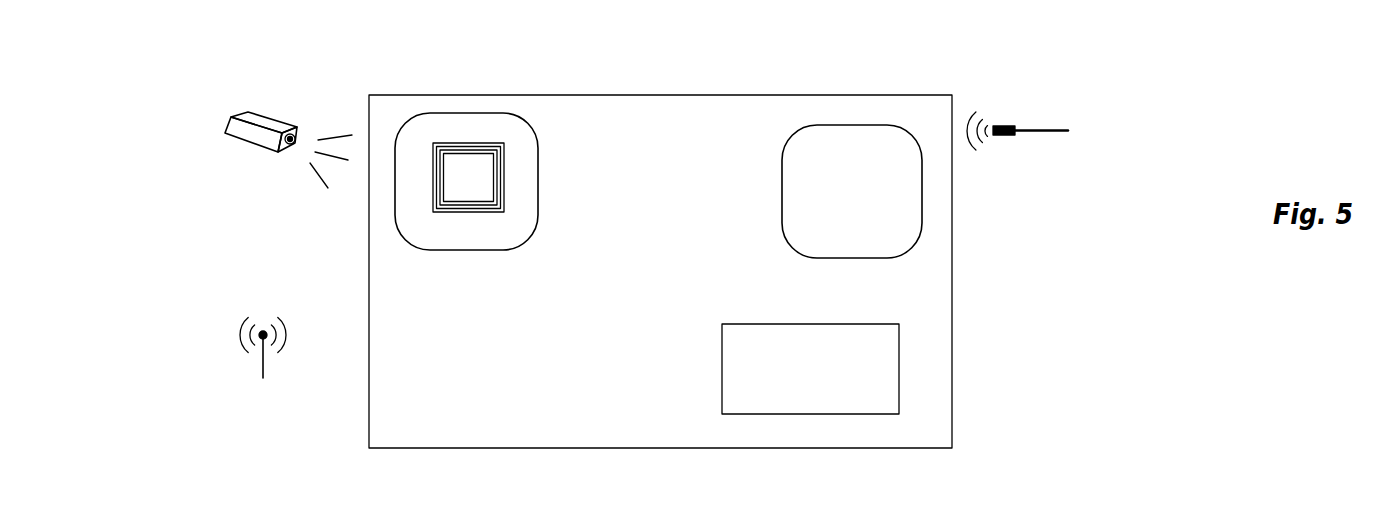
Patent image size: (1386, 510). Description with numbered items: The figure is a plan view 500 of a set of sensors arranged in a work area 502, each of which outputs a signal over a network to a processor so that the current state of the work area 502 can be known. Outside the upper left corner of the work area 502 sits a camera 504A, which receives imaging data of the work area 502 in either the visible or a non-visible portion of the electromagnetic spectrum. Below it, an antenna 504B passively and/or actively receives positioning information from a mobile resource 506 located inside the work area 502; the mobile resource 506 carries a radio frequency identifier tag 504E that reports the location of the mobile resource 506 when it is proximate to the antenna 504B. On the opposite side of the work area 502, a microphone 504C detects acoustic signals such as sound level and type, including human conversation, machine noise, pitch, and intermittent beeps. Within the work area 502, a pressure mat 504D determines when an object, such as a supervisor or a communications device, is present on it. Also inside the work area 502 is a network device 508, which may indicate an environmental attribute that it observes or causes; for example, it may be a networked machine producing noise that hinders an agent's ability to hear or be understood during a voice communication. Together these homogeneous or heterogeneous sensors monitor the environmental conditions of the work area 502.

The plan view 500 is at (1022, 46).
The work area 502 is at (640, 184).
The camera 504A is at (272, 122).
The antenna 504B is at (263, 358).
The microphone 504C is at (1035, 132).
The pressure mat 504D is at (900, 365).
The radio frequency identifier tag 504E is at (470, 143).
The mobile resource 506 is at (537, 140).
The network device 508 is at (825, 123).